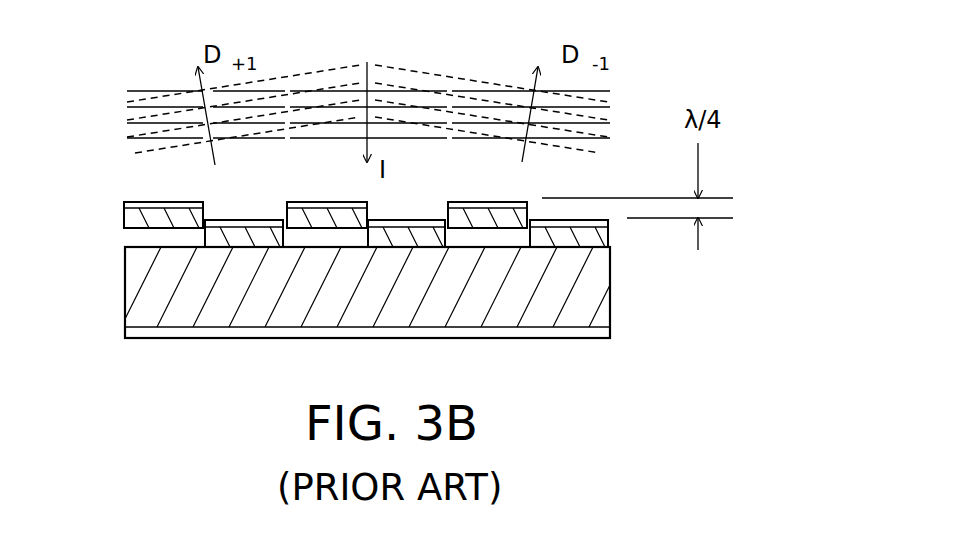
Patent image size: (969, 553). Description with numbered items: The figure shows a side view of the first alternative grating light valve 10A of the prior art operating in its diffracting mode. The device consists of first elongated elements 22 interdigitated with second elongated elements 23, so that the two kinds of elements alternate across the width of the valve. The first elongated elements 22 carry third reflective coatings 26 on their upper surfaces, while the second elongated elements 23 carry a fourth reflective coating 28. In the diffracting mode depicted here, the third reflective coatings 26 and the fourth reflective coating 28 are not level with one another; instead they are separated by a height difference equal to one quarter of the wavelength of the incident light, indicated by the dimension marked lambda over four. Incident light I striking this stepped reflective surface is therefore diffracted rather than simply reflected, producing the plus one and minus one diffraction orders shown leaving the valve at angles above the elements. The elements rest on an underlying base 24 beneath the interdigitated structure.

The first alternative GLV 10A is at (787, 112).
The first elongated elements 22 is at (124, 218).
The second elongated elements 23 is at (205, 238).
The substrate 24 is at (125, 300).
The third reflective coatings 26 is at (127, 202).
The fourth reflective coating 28 is at (217, 219).